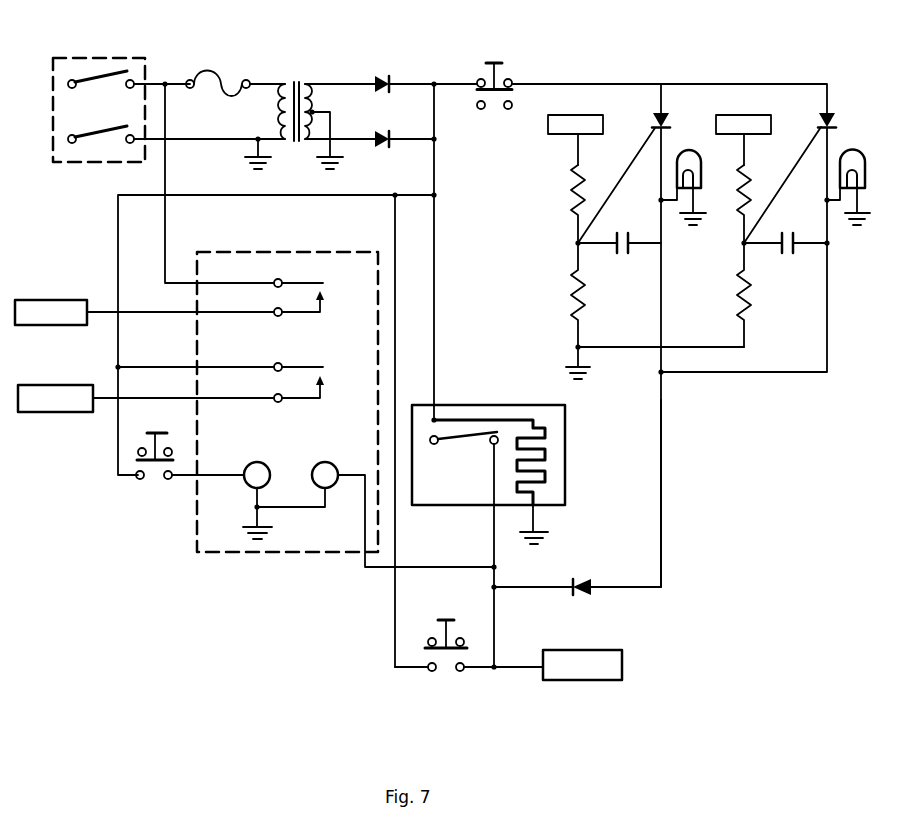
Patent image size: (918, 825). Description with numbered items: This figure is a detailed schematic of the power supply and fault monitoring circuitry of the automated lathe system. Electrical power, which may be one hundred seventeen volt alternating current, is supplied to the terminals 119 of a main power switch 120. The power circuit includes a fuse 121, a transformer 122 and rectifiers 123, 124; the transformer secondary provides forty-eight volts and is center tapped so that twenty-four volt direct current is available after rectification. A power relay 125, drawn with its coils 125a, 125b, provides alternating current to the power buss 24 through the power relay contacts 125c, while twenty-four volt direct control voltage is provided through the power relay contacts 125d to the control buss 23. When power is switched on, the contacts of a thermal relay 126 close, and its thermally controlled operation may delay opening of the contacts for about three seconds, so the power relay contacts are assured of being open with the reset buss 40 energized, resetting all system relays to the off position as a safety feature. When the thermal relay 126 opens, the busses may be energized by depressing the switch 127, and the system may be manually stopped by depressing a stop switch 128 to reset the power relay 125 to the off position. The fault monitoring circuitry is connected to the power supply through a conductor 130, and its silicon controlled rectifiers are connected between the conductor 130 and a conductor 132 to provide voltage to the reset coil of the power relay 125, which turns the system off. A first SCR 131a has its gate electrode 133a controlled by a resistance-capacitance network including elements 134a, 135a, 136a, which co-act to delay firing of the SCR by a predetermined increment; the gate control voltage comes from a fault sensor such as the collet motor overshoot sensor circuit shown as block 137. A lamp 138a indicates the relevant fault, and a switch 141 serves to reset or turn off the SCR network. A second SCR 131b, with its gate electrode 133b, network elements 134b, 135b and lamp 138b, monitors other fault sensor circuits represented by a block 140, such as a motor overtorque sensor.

The terminals 119 is at (72, 90).
The main power switch 120 is at (99, 55).
The fuse 121 is at (221, 84).
The transformer 122 is at (302, 83).
The rectifier 123 is at (438, 50).
The rectifier 124 is at (398, 144).
The power relay 125 is at (307, 442).
The power relay coil 125a is at (254, 461).
The power relay reset coil 125b is at (334, 462).
The power relay contacts 125c is at (355, 268).
The power relay contacts 125d is at (355, 340).
The thermal relay 126 is at (566, 494).
The switch 127 is at (150, 485).
The stop switch 128 is at (445, 677).
The conductor 130 is at (452, 83).
The first SCR 131a is at (667, 116).
The SCR 131b is at (873, 86).
The conductor 132 is at (663, 527).
The gate electrode 133a is at (652, 133).
The gate electrode 133b is at (790, 178).
The resistance element 134a is at (573, 188).
The resistance element 134b is at (734, 204).
The resistance element 135a is at (576, 288).
The resistance element 135b is at (746, 318).
The capacitance element 136a is at (640, 250).
The collet motor overshoot sensor circuit 137 is at (547, 128).
The lamp 138a is at (702, 181).
The lamp 138b is at (866, 166).
The fault sensor circuit block 140 is at (744, 115).
The switch 141 is at (507, 71).
The control buss 23 is at (78, 413).
The power buss 24 is at (76, 327).
The reset buss 40 is at (543, 680).